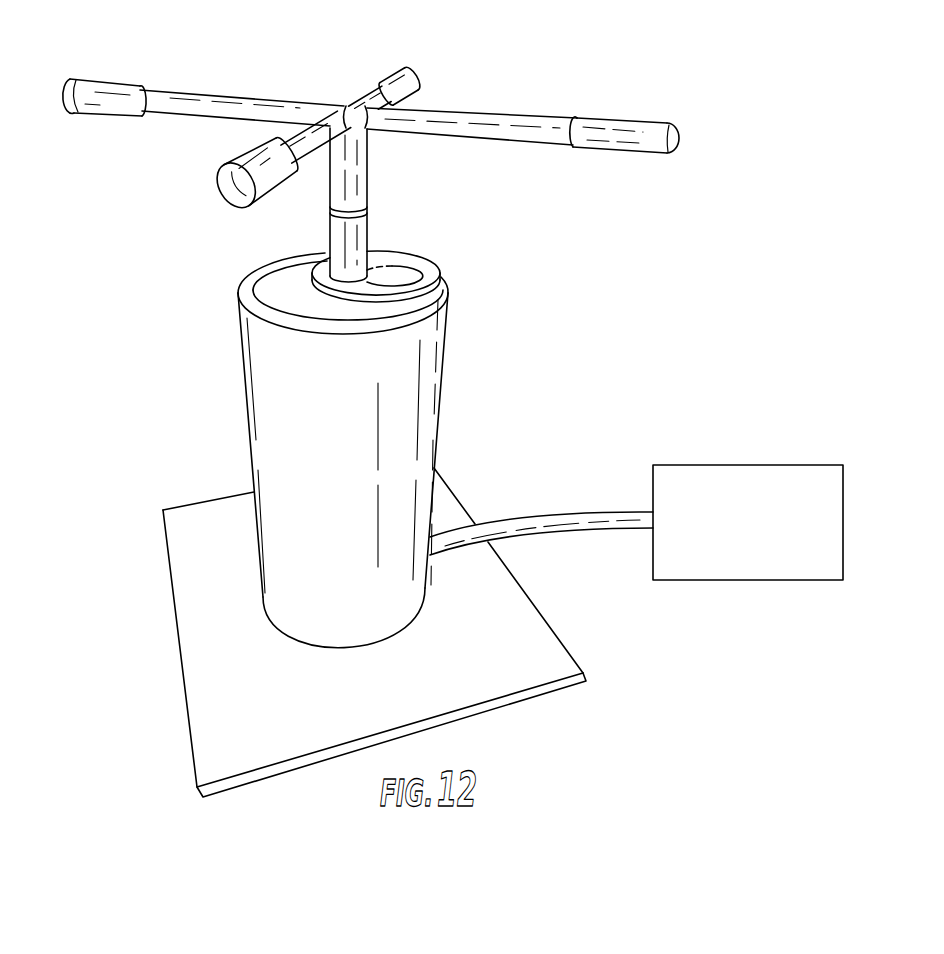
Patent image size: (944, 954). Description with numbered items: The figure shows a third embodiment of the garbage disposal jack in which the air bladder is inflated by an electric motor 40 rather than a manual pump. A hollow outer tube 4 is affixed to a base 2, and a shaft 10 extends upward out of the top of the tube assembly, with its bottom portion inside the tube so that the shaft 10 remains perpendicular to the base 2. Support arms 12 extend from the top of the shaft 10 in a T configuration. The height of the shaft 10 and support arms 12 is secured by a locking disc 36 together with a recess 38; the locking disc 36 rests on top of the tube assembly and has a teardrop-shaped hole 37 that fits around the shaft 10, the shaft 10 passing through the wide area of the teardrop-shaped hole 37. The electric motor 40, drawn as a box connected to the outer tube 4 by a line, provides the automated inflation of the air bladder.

The base 2 is at (553, 653).
The outer tube 4 is at (437, 414).
The shaft 10 is at (327, 203).
The support arms 12 is at (373, 80).
The locking disc 36 is at (434, 270).
The teardrop-shaped hole 37 is at (405, 266).
The recess 38 is at (370, 209).
The electric motor 40 is at (761, 541).